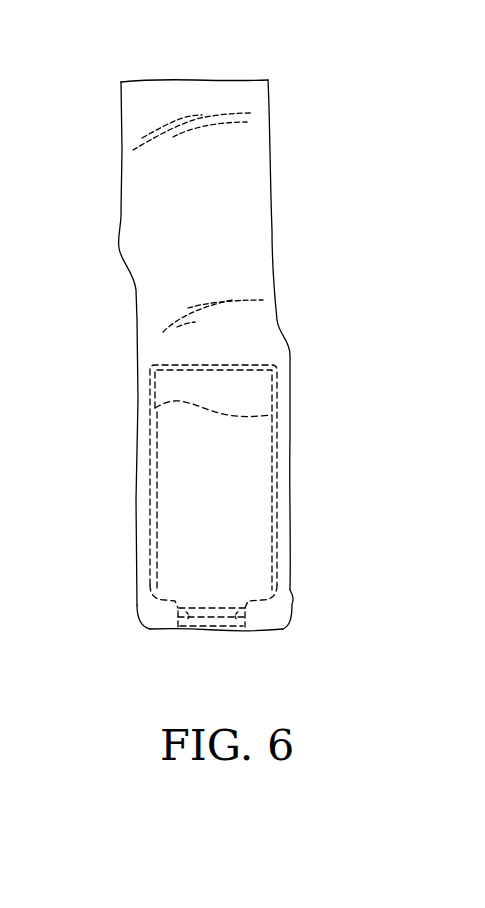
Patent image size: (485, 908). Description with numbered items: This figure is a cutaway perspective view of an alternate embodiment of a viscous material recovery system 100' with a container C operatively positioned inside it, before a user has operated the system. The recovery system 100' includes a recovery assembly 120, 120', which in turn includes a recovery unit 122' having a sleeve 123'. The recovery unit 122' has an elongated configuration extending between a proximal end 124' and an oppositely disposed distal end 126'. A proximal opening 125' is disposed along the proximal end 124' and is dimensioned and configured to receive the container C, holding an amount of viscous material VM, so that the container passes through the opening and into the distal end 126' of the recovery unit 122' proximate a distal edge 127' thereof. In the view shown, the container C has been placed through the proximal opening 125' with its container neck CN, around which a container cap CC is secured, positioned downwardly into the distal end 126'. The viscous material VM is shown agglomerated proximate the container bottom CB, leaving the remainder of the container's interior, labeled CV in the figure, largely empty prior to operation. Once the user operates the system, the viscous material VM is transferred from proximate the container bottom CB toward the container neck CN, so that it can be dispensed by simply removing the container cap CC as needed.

The viscous material recovery system 100' is at (216, 352).
The flexible package 120 is at (210, 352).
The recovery assembly 120' is at (207, 352).
The recovery unit 122' is at (318, 335).
The sleeve 123' is at (198, 222).
The proximal end 124' is at (83, 343).
The proximal opening 125' is at (194, 46).
The distal end 126' is at (262, 614).
The distal edge 127' is at (241, 653).
The container C is at (273, 495).
The container bottom CB is at (242, 364).
The container volume CV is at (253, 566).
The viscous material VM is at (256, 393).
The container neck CN is at (200, 603).
The container cap CC is at (179, 620).